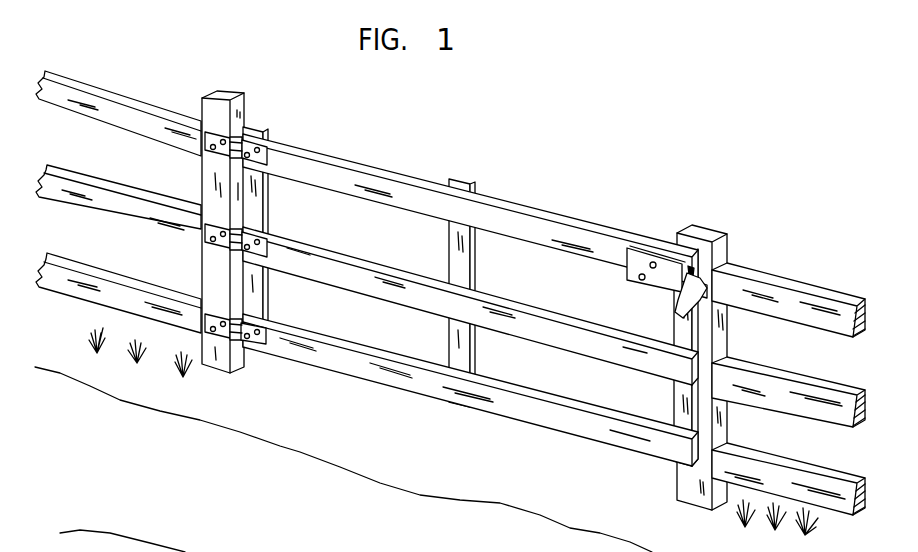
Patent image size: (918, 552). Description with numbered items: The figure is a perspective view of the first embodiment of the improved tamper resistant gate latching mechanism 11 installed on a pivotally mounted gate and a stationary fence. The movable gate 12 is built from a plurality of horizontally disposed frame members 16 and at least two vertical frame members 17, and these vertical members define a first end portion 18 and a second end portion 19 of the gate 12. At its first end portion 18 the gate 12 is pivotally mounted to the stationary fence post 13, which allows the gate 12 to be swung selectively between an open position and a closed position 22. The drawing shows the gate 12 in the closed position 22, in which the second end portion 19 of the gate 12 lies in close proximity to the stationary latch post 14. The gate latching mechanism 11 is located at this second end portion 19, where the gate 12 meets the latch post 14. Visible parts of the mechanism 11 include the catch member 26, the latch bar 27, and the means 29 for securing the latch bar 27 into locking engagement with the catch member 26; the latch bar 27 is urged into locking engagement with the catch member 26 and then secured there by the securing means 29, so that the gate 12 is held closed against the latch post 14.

The tamper resistant gate latching mechanism 11 is at (704, 233).
The movable gate 12 is at (470, 291).
The stationary fence post 13 is at (216, 92).
The stationary latch post 14 is at (700, 227).
The horizontally disposed frame members 16 is at (345, 177).
The vertical frame members 17 is at (262, 198).
The first end portion 18 is at (246, 131).
The second end portion 19 is at (700, 266).
The closed position 22 is at (755, 426).
The catch member 26 is at (690, 318).
The latch bar 27 is at (708, 288).
The means for securing latch bar 29 is at (653, 262).